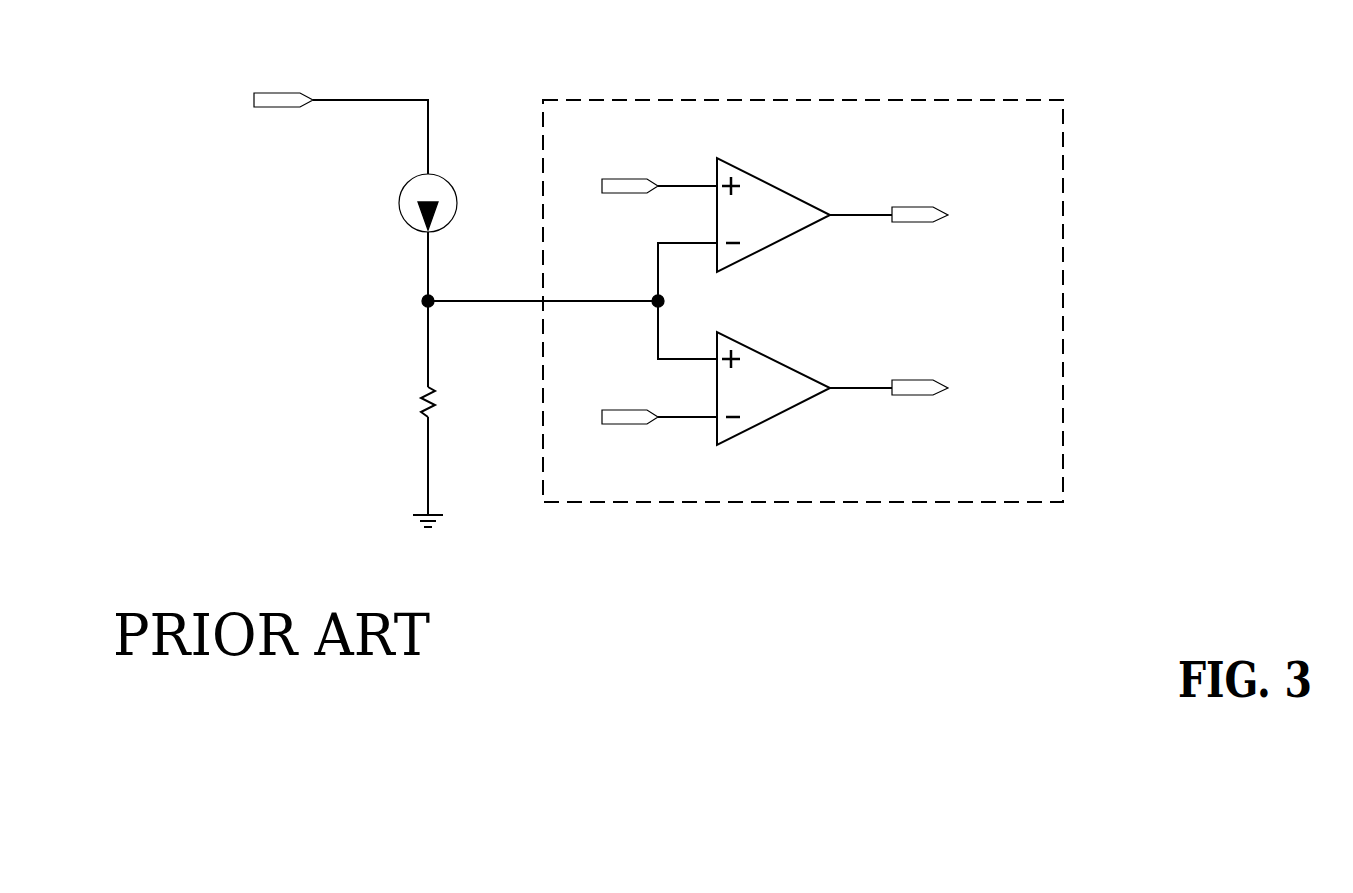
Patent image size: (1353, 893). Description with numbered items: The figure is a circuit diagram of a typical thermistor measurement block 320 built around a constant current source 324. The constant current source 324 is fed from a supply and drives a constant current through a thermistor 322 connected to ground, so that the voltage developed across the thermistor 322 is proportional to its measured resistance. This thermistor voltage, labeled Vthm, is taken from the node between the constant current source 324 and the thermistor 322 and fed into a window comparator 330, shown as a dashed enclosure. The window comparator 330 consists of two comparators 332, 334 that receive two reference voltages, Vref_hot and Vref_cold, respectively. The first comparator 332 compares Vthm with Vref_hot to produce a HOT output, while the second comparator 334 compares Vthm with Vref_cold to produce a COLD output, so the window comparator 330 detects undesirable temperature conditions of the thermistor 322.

The thermistor measurement block 320 is at (922, 54).
The thermistor 322 is at (424, 389).
The constant current source 324 is at (407, 182).
The window comparator 330 is at (701, 100).
The comparator 332 is at (762, 178).
The comparator 334 is at (762, 351).